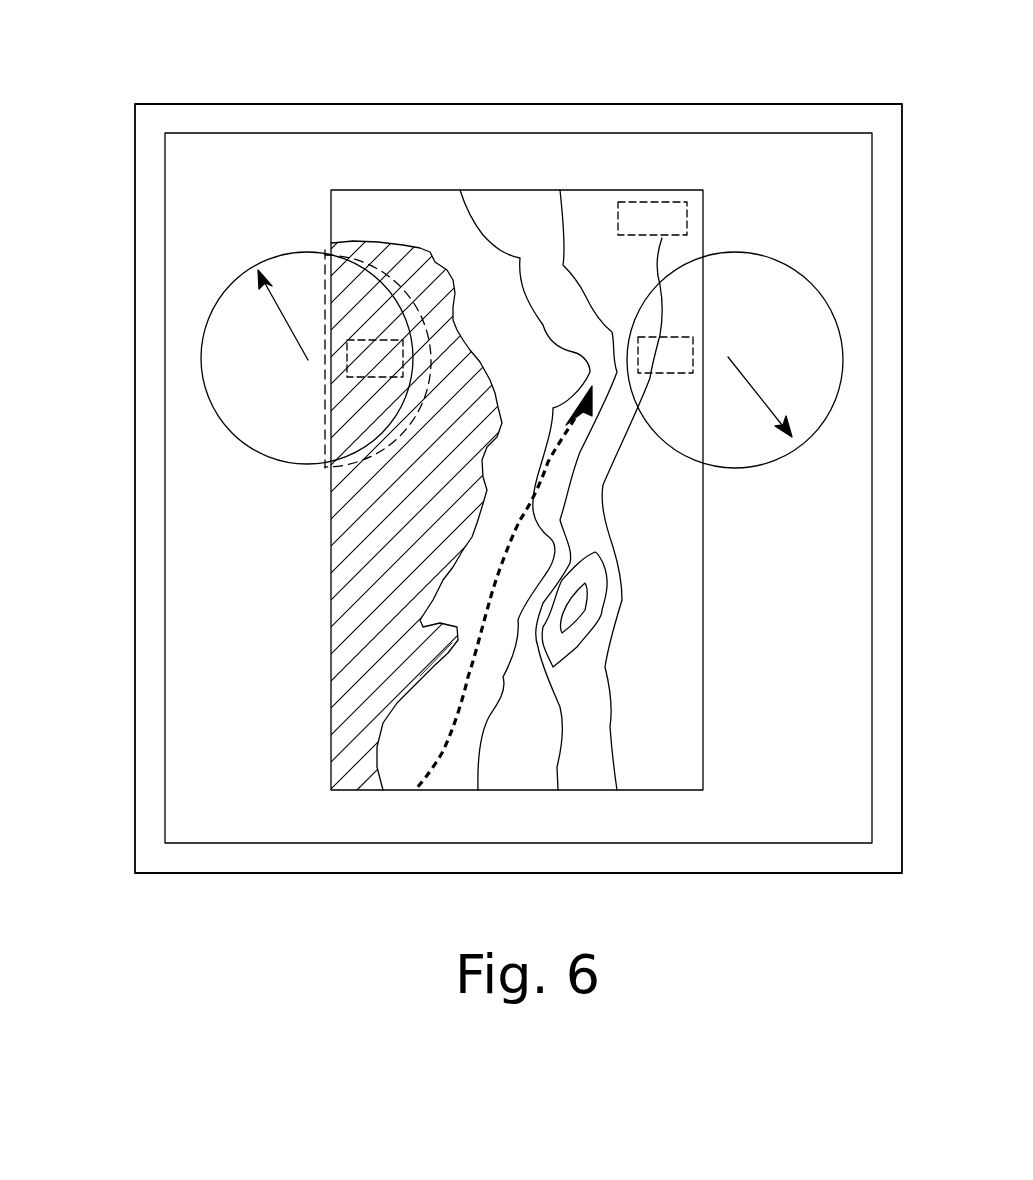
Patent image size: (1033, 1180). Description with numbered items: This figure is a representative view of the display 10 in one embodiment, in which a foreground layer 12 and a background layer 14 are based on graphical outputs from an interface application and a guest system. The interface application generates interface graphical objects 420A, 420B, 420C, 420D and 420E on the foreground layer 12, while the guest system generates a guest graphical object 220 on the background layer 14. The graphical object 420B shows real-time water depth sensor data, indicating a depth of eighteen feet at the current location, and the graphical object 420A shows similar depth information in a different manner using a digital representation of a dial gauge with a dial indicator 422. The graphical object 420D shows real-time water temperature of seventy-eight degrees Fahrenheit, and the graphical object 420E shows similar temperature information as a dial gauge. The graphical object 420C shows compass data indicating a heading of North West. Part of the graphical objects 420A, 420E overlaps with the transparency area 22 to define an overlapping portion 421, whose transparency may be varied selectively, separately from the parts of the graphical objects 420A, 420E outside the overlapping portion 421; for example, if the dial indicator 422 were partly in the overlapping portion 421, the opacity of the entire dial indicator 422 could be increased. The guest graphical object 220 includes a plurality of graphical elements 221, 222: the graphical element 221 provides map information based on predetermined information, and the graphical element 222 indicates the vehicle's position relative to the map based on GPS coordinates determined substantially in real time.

The display 10 is at (104, 131).
The foreground layer 12 is at (873, 177).
The background layer 14 is at (595, 189).
The transparency area 22 is at (331, 632).
The guest graphical object 220 is at (704, 602).
The graphical element 221 is at (670, 686).
The graphical element 222 is at (577, 419).
The graphical object 420A is at (238, 283).
The graphical object 420B is at (372, 379).
The graphical object 420C is at (644, 202).
The graphical object 420D is at (673, 374).
The graphical object 420E is at (769, 263).
The overlapping portion 421 is at (330, 469).
The dial indicator 422 is at (280, 311).